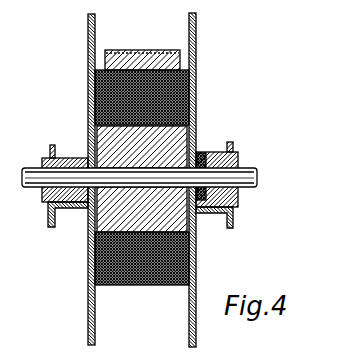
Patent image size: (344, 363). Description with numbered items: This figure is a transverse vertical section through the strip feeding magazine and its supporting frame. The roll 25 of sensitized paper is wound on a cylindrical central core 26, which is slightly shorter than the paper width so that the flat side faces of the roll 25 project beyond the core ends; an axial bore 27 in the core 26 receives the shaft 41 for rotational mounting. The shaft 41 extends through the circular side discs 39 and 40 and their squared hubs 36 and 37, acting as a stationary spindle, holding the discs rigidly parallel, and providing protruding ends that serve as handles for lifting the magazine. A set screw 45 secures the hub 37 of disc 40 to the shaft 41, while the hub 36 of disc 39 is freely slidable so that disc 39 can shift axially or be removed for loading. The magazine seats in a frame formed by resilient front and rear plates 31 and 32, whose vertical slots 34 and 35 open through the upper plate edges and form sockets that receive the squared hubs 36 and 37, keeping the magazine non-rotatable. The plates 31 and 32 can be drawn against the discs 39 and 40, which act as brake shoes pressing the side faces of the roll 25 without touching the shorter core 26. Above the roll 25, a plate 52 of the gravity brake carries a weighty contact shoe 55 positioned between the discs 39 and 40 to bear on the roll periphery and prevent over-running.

The roll of sensitized paper 25 is at (132, 287).
The central core 26 is at (108, 218).
The axial bore 27 is at (162, 183).
The front plate 31 is at (50, 218).
The rear plate 32 is at (234, 222).
The vertical slot 34 is at (50, 152).
The vertical slot 35 is at (239, 150).
The squared hub 36 is at (43, 162).
The squared hub 37 is at (238, 160).
The circular side disc 39 is at (88, 50).
The circular side disc 40 is at (197, 48).
The shaft 41 is at (249, 170).
The set screw 45 is at (209, 150).
The plate 52 is at (129, 51).
The contact shoe 55 is at (152, 58).